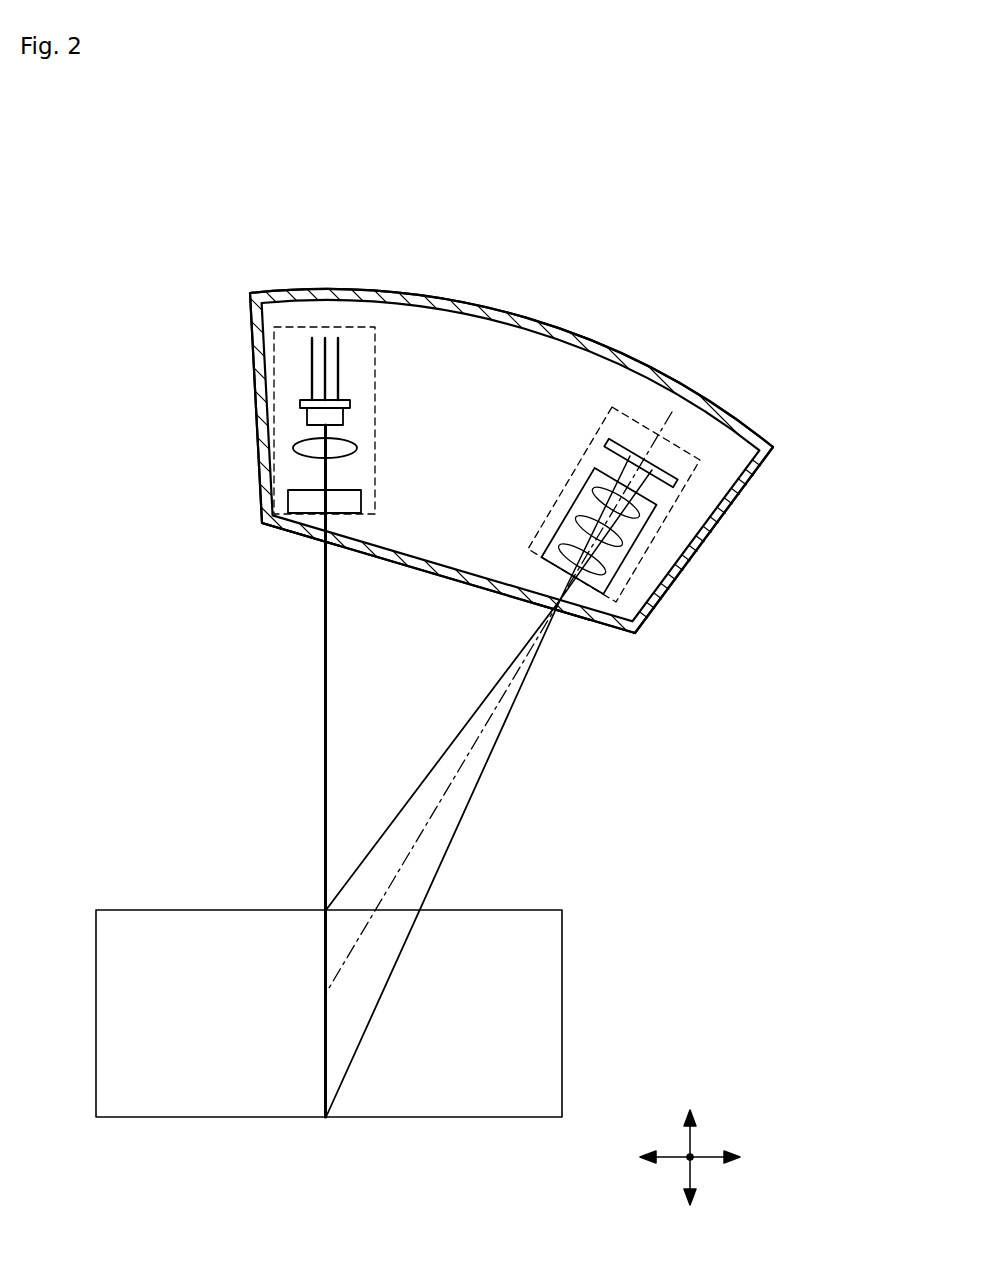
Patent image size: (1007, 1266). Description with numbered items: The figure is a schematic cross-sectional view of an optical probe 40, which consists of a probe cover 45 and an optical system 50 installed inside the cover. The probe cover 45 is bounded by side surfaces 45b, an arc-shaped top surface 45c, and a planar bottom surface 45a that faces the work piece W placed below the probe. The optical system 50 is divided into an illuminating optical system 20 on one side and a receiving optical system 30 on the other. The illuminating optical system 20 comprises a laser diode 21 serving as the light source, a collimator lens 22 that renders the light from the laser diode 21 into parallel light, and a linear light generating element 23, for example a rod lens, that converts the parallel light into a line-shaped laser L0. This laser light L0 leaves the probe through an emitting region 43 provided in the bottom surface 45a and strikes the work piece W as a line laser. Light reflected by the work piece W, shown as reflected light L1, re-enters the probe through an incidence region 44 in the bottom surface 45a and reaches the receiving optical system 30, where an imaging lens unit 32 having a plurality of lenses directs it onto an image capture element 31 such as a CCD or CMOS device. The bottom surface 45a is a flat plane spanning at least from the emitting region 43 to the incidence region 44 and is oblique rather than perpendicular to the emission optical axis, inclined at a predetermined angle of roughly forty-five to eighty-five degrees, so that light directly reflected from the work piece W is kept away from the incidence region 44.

The probe 40 is at (400, 219).
The optical system 50 is at (583, 262).
The illuminating optical system 20 is at (375, 378).
The laser diode 21 is at (345, 412).
The collimator lens 22 is at (357, 447).
The linear light generating element 23 is at (362, 501).
The receiving optical system 30 is at (600, 437).
The image capture element 31 is at (618, 437).
The imaging lens unit 32 is at (572, 507).
The probe cover 45 is at (702, 545).
The bottom surface 45a is at (460, 582).
The side surfaces 45b is at (255, 413).
The top surface 45c is at (583, 340).
The emitting region 43 is at (296, 527).
The incidence region 44 is at (578, 615).
The laser light L0 is at (325, 697).
The reflected light L1 is at (468, 793).
The work piece W is at (137, 915).